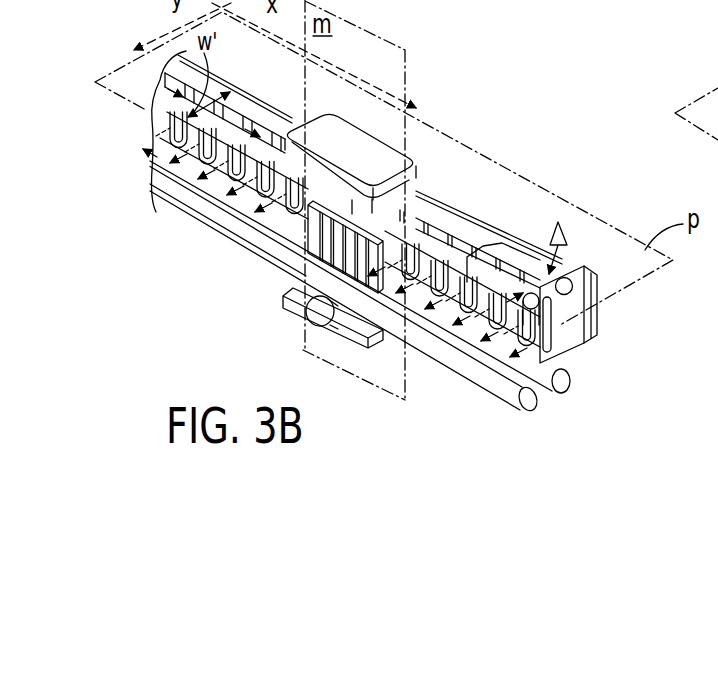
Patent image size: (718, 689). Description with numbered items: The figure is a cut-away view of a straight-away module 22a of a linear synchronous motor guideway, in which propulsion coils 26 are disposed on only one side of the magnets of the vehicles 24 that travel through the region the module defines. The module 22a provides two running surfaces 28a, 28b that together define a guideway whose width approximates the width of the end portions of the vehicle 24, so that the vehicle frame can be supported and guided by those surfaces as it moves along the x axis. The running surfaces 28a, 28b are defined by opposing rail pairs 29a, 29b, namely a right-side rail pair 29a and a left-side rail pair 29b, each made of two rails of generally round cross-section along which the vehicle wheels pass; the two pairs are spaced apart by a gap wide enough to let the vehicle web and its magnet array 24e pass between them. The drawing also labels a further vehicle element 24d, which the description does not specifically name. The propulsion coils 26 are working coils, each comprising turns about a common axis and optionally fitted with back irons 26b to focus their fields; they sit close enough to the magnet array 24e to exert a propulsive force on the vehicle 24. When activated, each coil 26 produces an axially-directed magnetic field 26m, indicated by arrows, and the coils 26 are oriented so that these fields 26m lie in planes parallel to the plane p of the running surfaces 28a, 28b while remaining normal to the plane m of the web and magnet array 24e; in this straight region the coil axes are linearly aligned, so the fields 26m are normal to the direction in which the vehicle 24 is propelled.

The straight-away module 22a is at (160, 98).
The vehicle 24 is at (367, 157).
The guide pin 24d is at (352, 190).
The magnet array 24e is at (352, 212).
The propulsion coils 26 is at (584, 350).
The back irons 26b is at (596, 326).
The axially-directed magnetic field 26m is at (520, 373).
The running surface 28a is at (483, 246).
The running surface 28b is at (450, 371).
The right-side rail pair 29a is at (562, 297).
The left-side rail pair 29b is at (533, 313).